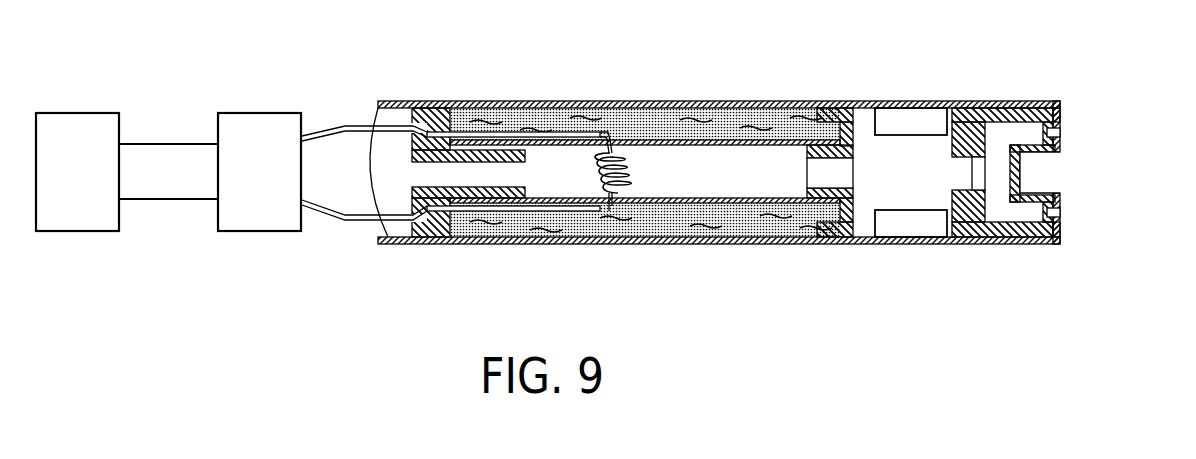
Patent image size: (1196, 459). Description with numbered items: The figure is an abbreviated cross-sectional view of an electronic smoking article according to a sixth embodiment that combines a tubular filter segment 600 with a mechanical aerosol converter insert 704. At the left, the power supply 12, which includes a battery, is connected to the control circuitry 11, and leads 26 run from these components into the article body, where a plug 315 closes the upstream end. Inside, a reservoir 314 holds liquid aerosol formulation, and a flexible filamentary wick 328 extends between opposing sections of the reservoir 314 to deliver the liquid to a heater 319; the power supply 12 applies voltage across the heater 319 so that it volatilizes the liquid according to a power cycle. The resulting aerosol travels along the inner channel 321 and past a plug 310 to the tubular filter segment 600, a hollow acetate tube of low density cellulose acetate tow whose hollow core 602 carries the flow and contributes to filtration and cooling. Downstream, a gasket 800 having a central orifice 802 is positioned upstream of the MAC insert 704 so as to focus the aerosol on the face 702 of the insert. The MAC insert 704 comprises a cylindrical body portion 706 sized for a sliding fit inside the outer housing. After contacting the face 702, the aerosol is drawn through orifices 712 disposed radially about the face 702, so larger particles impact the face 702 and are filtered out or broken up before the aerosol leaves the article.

The control circuitry 11 is at (78, 212).
The power supply 12 is at (256, 212).
The electrical lead 26 is at (498, 134).
The flexible filamentary wick 328 is at (630, 145).
The heater 319 is at (624, 175).
The end plug 310 is at (832, 120).
The inlet plug 315 is at (437, 172).
The inner channel 321 is at (707, 182).
The reservoir 314 is at (760, 225).
The tubular filter segment 600 is at (900, 224).
The hollow core 602 is at (930, 157).
The gasket 800 is at (999, 172).
The central orifice 802 is at (978, 150).
The face 702 is at (1003, 103).
The mechanical aerosol converter insert 704 is at (1047, 148).
The cylindrical body portion 706 is at (997, 178).
The orifices 712 is at (1053, 214).